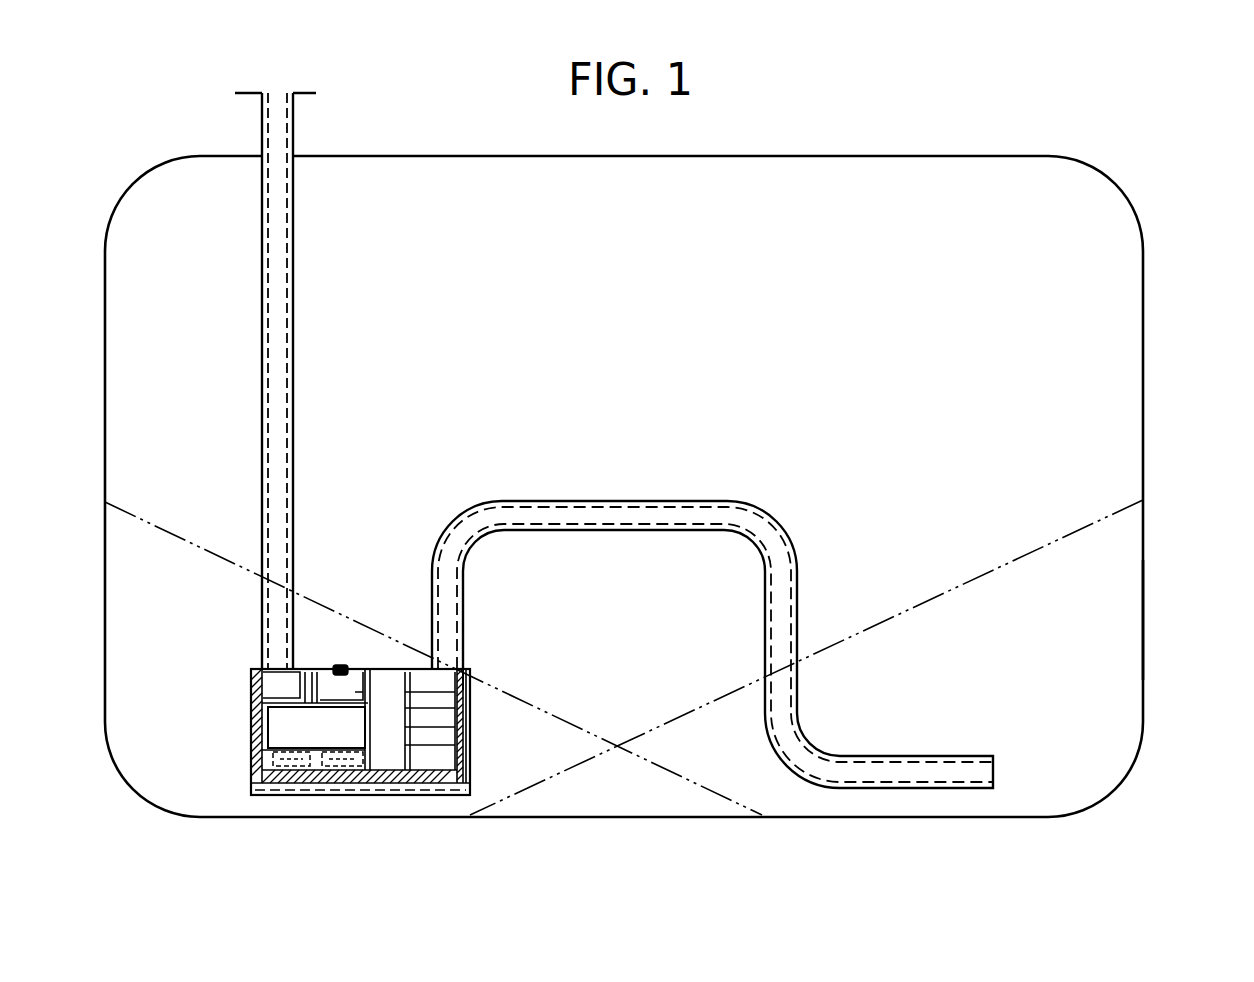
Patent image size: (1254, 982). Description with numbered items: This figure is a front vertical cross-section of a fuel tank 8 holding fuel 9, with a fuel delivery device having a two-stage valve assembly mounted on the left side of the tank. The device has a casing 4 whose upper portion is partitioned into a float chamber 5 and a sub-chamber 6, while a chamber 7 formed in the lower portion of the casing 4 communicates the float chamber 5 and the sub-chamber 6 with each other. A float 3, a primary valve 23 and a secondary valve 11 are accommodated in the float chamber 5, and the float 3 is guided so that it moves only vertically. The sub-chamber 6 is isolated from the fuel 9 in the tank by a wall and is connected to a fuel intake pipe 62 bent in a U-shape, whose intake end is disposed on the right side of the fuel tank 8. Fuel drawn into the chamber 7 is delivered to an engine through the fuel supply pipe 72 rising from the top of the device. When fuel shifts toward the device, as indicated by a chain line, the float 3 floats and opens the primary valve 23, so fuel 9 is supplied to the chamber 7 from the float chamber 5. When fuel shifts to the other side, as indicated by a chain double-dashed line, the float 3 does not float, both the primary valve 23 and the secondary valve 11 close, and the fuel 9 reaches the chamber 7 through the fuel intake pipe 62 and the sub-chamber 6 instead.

The float 3 is at (268, 720).
The casing 4 is at (346, 790).
The float chamber 5 is at (287, 768).
The sub-chamber 6 is at (472, 780).
The chamber 7 is at (412, 790).
The fuel tank 8 is at (1143, 437).
The fuel 9 is at (1132, 610).
The secondary valve 11 is at (252, 758).
The primary valve 23 is at (252, 790).
The fuel intake pipe 62 is at (858, 786).
The fuel supply pipe 72 is at (263, 418).